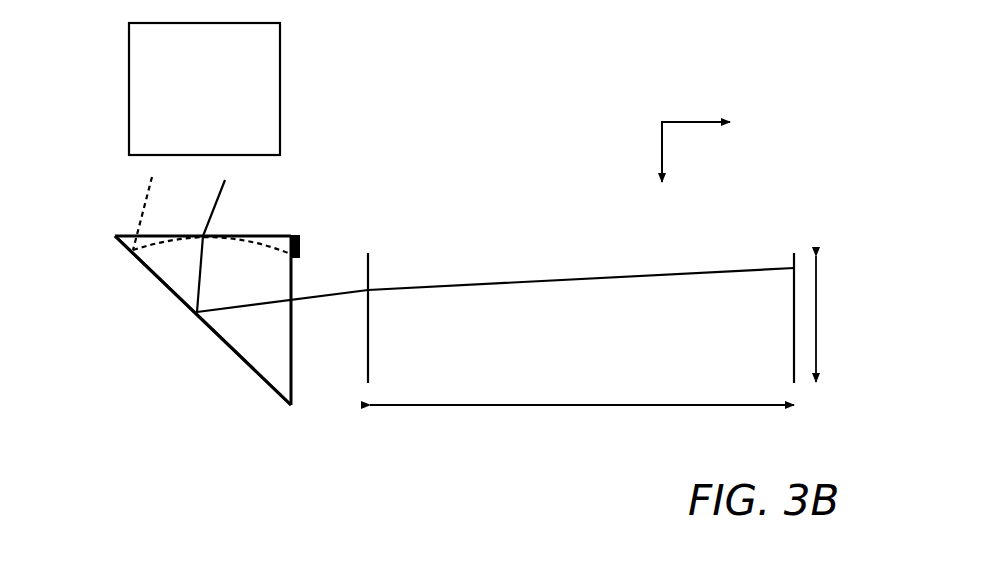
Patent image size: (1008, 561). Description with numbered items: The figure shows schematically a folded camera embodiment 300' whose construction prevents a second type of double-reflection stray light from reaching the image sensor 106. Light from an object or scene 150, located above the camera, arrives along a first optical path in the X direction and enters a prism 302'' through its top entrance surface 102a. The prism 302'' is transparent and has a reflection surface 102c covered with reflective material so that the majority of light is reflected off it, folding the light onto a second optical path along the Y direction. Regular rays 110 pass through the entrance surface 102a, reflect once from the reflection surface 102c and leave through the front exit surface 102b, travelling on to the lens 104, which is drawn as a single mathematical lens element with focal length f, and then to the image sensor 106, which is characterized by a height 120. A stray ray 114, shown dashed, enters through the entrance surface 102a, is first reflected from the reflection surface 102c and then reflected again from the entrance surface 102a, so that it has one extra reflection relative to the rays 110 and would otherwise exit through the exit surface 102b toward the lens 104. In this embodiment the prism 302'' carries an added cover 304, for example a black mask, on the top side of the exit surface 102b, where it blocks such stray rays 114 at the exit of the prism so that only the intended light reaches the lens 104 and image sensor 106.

The folded camera embodiment 300' is at (495, 224).
The object or scene 150 is at (182, 136).
The stray ray 114 is at (148, 186).
The rays 110 is at (220, 193).
The entrance surface 102a is at (267, 236).
The cover 304 is at (301, 241).
The reflection surface 102c is at (246, 366).
The prism 302'' is at (160, 320).
The exit surface 102b is at (293, 393).
The lens 104 is at (368, 378).
The image sensor 106 is at (794, 253).
The height 120 is at (816, 305).